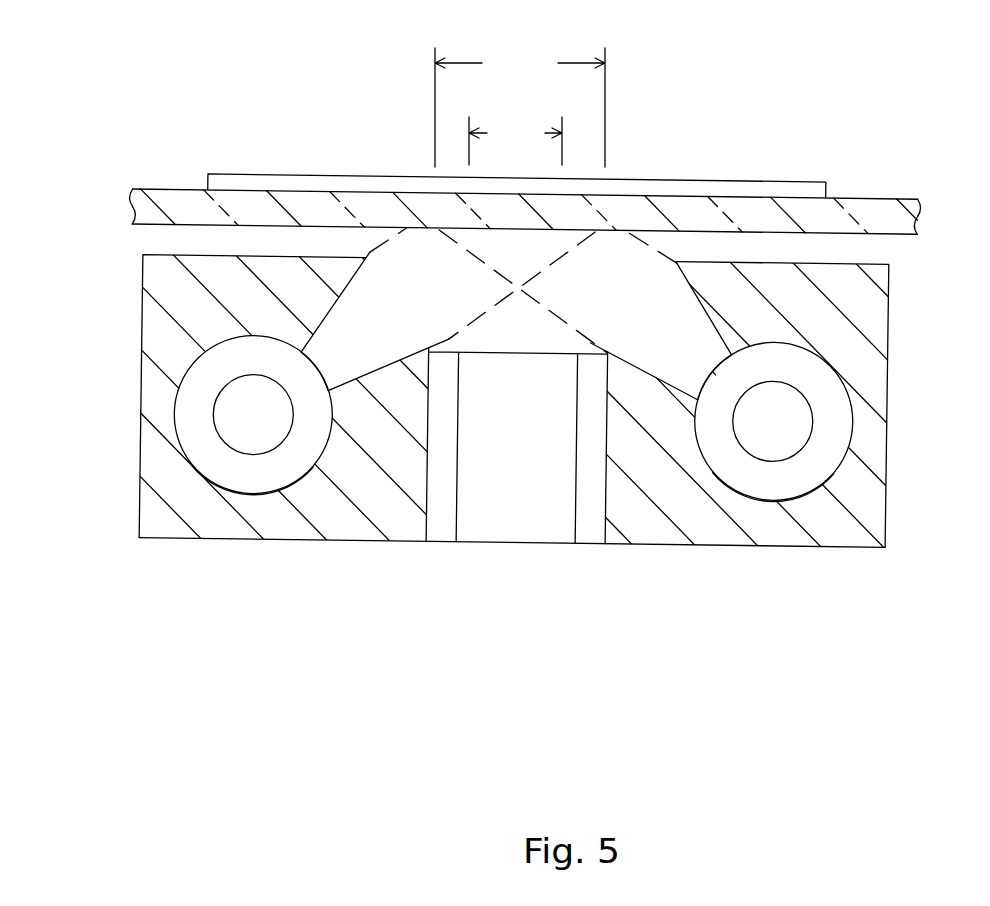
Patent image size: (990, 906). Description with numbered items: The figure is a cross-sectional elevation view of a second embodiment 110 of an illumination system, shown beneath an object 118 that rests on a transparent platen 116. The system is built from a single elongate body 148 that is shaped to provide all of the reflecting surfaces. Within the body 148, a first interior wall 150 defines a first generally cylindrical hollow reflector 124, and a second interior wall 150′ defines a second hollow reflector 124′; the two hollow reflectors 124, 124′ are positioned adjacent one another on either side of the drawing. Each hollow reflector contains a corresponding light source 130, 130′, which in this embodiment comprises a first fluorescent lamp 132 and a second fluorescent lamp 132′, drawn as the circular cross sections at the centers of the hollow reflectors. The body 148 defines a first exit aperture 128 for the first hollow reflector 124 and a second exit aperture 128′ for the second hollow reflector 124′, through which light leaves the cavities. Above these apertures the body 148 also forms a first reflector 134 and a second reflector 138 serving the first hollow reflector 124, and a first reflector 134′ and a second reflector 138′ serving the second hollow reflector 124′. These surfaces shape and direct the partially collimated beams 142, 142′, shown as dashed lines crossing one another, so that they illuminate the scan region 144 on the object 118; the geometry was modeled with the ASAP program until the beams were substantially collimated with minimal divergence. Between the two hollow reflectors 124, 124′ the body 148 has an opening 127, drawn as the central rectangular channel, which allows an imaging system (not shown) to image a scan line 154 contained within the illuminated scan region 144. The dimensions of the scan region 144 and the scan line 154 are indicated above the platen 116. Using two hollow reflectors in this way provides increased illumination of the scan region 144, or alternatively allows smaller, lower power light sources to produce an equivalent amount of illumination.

The second embodiment of the illumination system 110 is at (495, 310).
The transparent platen 116 is at (876, 198).
The object 118 is at (740, 181).
The first hollow reflector 124 is at (130, 381).
The second hollow reflector 124′ is at (899, 381).
The opening 127 is at (565, 528).
The first exit aperture 128 is at (301, 369).
The second exit aperture 128′ is at (708, 375).
The light source 130 is at (288, 366).
The light source 130′ is at (813, 380).
The first fluorescent lamp 132 is at (213, 419).
The second fluorescent lamp 132′ is at (812, 435).
The first reflector 134 is at (357, 268).
The first reflector 134′ is at (686, 284).
The second reflector 138 is at (385, 368).
The second reflector 138′ is at (632, 316).
The partially collimated beam 142 is at (480, 304).
The partially collimated beam 142′ is at (548, 310).
The scan region 144 is at (520, 106).
The elongate body 148 is at (141, 509).
The first interior wall 150 is at (263, 475).
The second interior wall 150′ is at (806, 482).
The scan line 154 is at (515, 140).